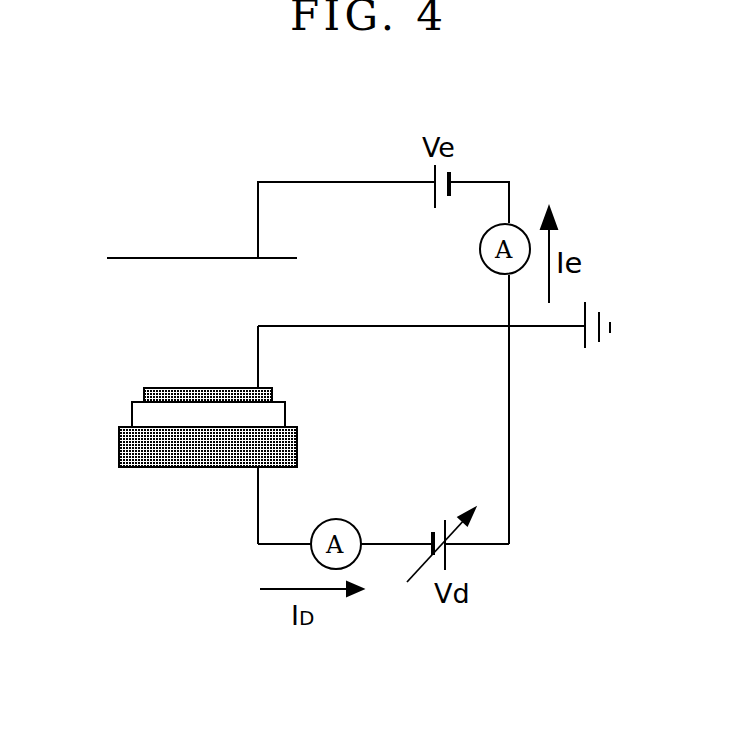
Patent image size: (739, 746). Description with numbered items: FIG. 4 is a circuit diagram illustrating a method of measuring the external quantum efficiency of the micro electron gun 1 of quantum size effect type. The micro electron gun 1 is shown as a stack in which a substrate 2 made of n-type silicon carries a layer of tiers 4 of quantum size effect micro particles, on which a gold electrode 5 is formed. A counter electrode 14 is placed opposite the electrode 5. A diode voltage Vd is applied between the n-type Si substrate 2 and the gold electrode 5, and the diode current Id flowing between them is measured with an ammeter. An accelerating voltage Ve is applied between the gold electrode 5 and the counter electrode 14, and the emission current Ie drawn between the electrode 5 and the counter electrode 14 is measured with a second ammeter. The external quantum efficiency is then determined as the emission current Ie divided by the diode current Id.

The counter electrode 14 is at (150, 258).
The micro electron gun of quantum size effect type 1 is at (175, 395).
The substrate 2 is at (119, 443).
The layer of tiers 4 is at (132, 412).
The electrode 5 is at (160, 388).